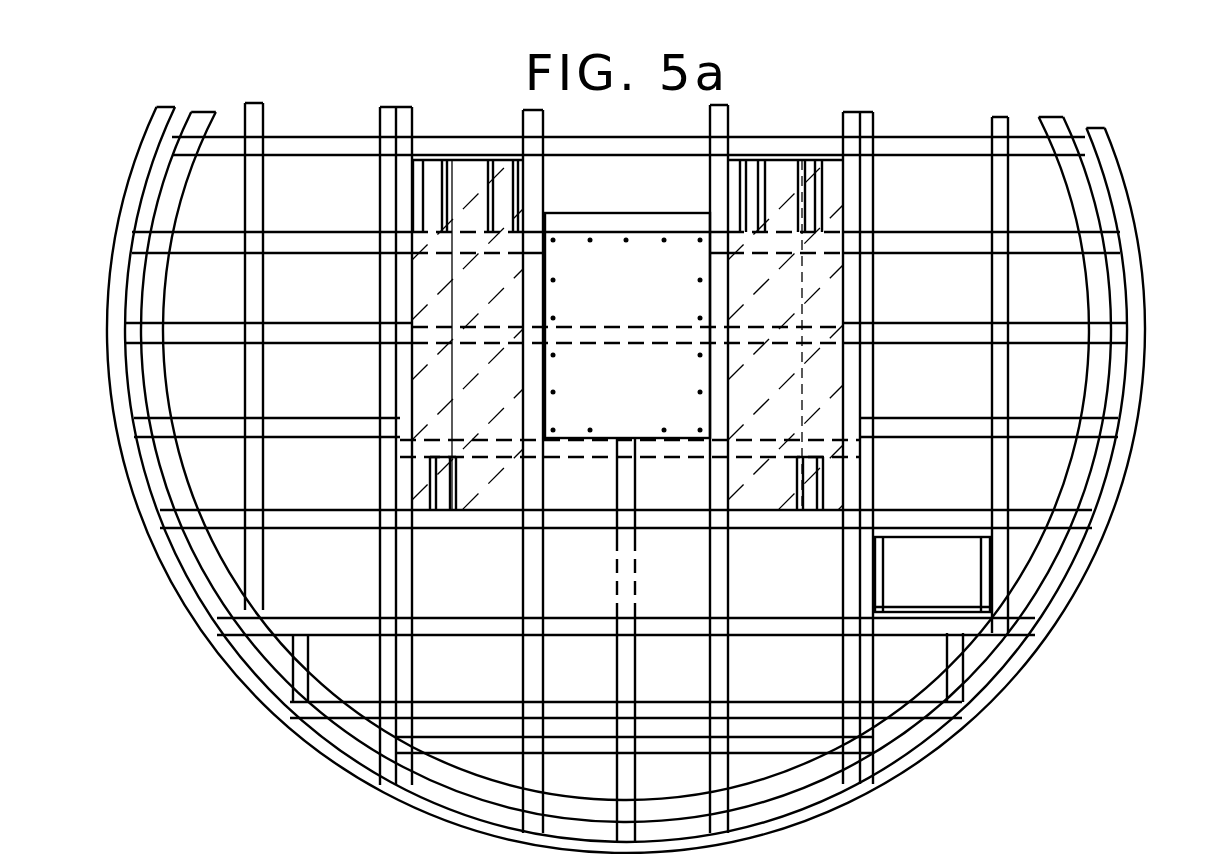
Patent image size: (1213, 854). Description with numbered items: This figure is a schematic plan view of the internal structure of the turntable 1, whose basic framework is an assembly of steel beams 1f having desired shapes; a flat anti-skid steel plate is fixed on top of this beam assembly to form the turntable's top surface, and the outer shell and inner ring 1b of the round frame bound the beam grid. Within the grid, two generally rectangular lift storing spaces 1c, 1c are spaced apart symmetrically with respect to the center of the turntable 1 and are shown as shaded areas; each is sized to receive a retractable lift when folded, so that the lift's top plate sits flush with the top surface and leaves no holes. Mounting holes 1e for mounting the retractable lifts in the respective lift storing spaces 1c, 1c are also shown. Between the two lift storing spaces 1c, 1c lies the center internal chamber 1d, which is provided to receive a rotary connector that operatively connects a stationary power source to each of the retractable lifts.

The turntable 1 is at (1118, 308).
The ring frame 1b is at (1078, 483).
The steel beams 1f is at (253, 572).
The lift storing spaces 1c is at (488, 402).
The center internal chamber 1d is at (648, 402).
The mounting holes 1e is at (502, 168).